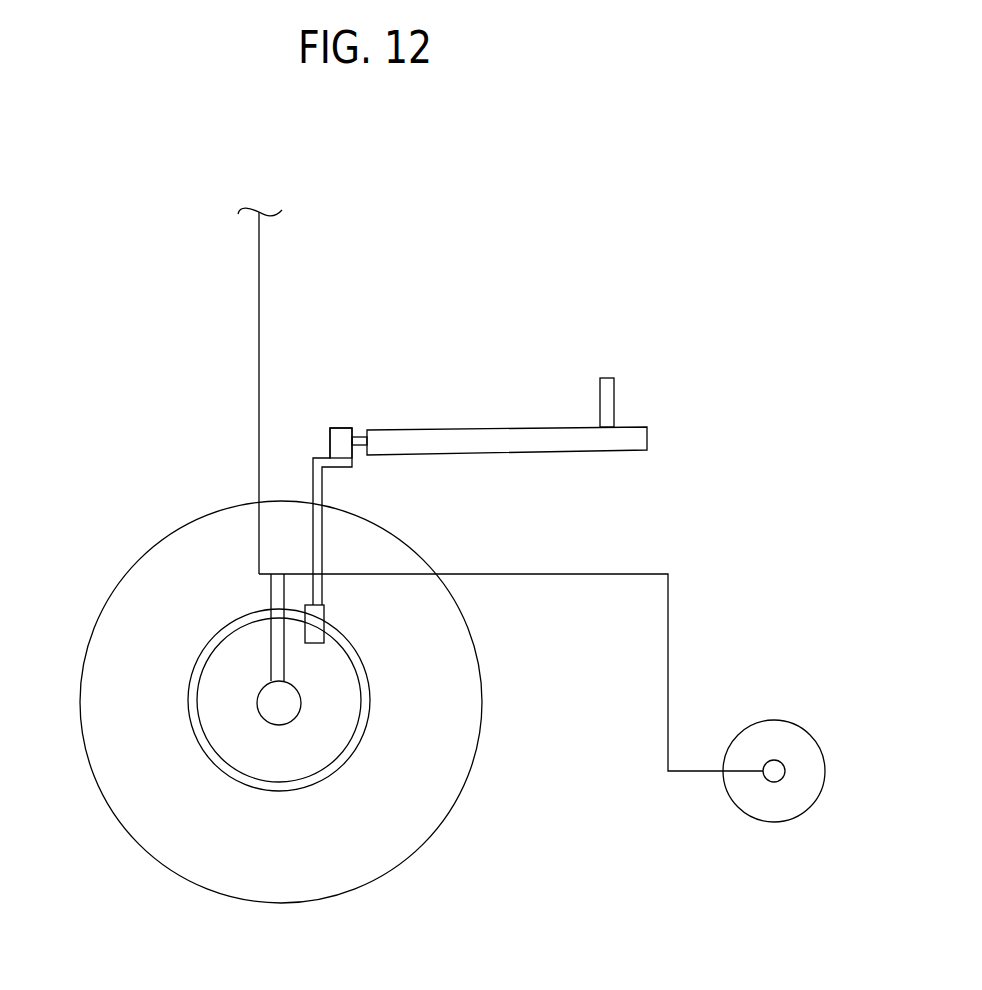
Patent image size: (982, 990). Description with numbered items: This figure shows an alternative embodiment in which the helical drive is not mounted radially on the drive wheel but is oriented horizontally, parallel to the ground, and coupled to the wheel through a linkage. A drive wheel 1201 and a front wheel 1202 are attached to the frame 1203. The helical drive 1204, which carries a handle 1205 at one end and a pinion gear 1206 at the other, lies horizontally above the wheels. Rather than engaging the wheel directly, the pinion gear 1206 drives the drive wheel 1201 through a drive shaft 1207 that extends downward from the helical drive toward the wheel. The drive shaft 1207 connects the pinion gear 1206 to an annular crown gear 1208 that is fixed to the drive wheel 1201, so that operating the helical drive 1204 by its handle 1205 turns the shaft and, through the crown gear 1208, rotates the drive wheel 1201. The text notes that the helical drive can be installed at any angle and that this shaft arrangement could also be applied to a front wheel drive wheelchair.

The drive wheel 1201 is at (170, 873).
The front wheel 1202 is at (813, 810).
The frame 1203 is at (694, 643).
The helical drive 1204 is at (505, 423).
The handle 1205 is at (608, 377).
The pinion gear 1206 is at (340, 427).
The drive shaft 1207 is at (327, 557).
The annular crown gear 1208 is at (196, 744).